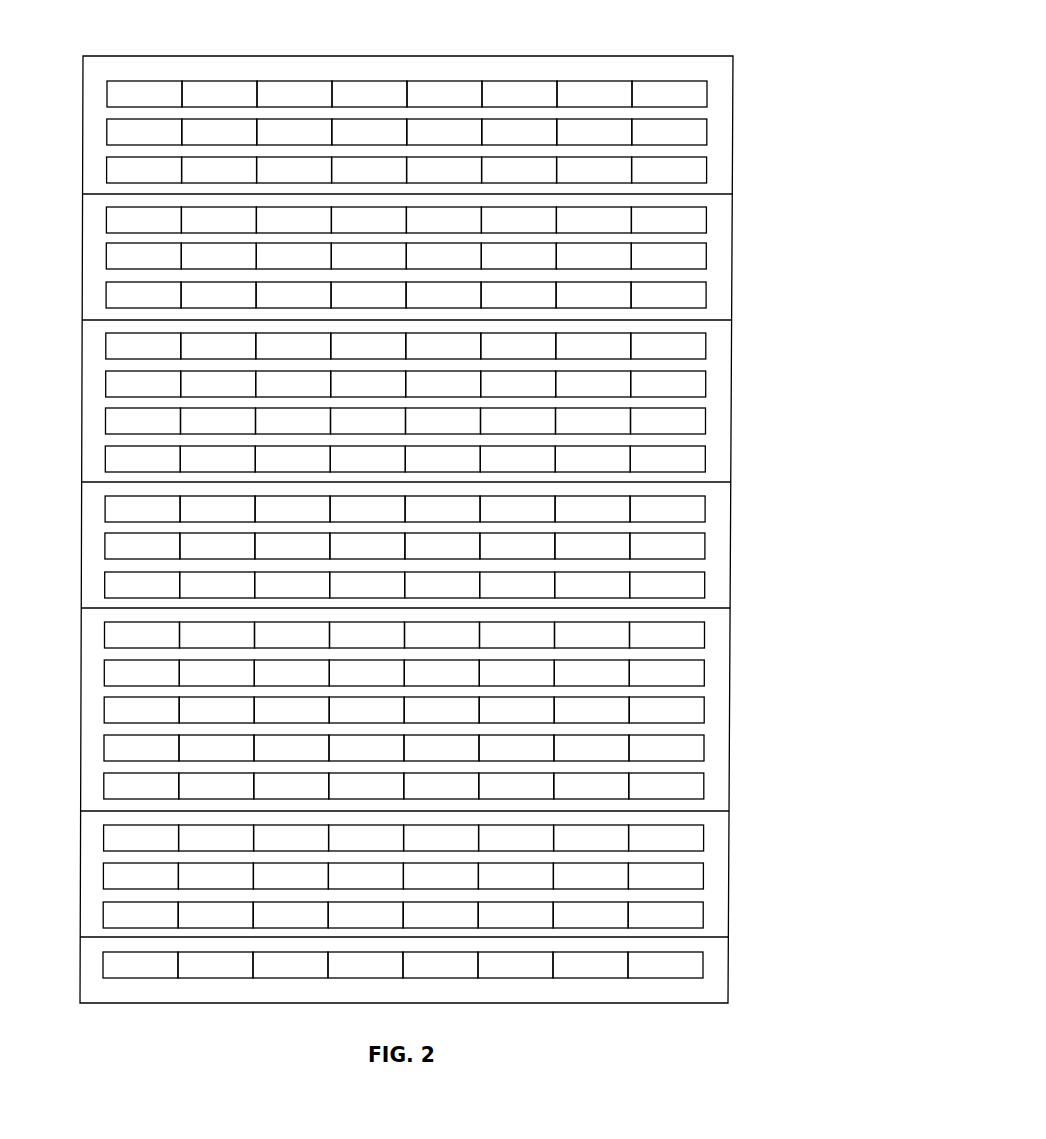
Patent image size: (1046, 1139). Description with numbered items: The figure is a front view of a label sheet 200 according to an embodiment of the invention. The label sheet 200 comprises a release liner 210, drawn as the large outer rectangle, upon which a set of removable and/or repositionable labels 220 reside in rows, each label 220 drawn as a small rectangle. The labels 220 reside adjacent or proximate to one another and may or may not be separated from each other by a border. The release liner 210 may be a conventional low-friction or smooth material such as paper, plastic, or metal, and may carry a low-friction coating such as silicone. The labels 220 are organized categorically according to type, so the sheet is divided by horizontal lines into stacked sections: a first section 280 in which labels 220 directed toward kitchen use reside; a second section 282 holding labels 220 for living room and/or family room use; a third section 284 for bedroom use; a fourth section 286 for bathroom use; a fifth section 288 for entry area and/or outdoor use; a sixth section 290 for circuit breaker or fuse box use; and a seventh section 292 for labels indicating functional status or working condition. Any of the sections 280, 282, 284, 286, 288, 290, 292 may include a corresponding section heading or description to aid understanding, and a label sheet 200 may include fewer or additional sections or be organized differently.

The label sheet 200 is at (736, 1041).
The release liner 210 is at (682, 56).
The labels 220 is at (405, 529).
The first section 280 is at (83, 82).
The second section 282 is at (83, 221).
The third section 284 is at (82, 345).
The fourth section 286 is at (82, 508).
The fifth section 288 is at (81, 633).
The sixth section 290 is at (80, 836).
The seventh section 292 is at (80, 964).